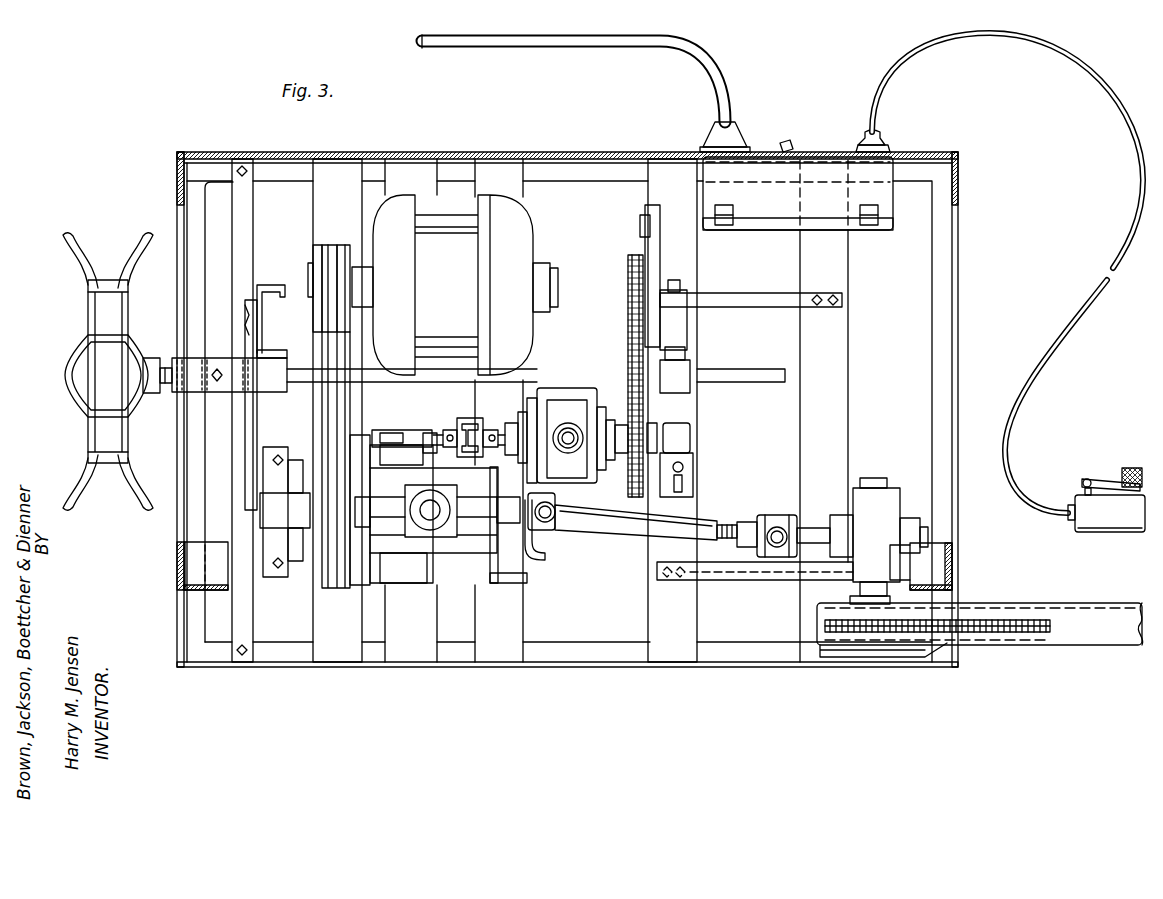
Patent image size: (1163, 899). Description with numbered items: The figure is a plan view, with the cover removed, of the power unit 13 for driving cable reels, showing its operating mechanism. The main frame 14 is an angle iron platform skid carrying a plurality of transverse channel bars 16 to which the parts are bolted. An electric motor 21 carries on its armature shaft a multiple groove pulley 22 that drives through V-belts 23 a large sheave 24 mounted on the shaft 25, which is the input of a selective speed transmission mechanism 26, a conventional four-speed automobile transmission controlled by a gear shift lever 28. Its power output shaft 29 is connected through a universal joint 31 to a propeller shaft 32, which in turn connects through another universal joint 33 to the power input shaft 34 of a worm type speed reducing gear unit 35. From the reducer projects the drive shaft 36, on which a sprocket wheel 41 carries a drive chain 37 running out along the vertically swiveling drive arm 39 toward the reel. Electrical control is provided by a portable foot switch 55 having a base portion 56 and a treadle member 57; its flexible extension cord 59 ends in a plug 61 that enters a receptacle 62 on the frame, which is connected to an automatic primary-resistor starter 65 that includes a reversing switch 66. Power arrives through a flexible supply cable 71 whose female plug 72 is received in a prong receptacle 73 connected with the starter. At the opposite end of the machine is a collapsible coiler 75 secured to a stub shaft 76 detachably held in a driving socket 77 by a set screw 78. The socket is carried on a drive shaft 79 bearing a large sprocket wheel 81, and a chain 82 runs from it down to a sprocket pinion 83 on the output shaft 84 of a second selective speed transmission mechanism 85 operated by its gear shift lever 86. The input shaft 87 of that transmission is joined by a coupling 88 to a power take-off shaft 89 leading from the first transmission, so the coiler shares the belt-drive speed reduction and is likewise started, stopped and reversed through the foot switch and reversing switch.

The power unit 13 is at (253, 132).
The main frame 14 is at (190, 186).
The transverse channel bars 16 is at (488, 165).
The electric motor 21 is at (527, 237).
The multiple groove pulley 22 is at (316, 256).
The V-belts 23 is at (345, 298).
The large sheave 24 is at (310, 586).
The shaft 25 is at (306, 505).
The selective speed transmission mechanism 26 is at (418, 553).
The gear shift lever 28 is at (435, 520).
The power output shaft 29 is at (527, 545).
The universal joint 31 is at (560, 522).
The propeller shaft 32 is at (640, 525).
The universal joint 33 is at (777, 520).
The power input shaft 34 is at (812, 528).
The speed reducing gear unit 35 is at (900, 505).
The drive shaft 36 is at (850, 600).
The drive chain 37 is at (1017, 635).
The drive arm 39 is at (1095, 637).
The sprocket wheel 41 is at (848, 635).
The foot switch 55 is at (1072, 470).
The base portion 56 is at (1110, 520).
The treadle member 57 is at (1130, 468).
The extension cord 59 is at (1105, 282).
The plug 61 is at (880, 136).
The receptacle 62 is at (892, 150).
The primary-resistor starter 65 is at (770, 208).
The reversing switch 66 is at (790, 151).
The supply cable 71 is at (604, 50).
The female plug 72 is at (735, 127).
The prong receptacle 73 is at (750, 148).
The coiler 75 is at (92, 315).
The stub shaft 76 is at (165, 385).
The driving socket 77 is at (178, 362).
The set screw 78 is at (217, 382).
The drive shaft 79 is at (303, 366).
The large sprocket wheel 81 is at (628, 285).
The chain 82 is at (662, 401).
The sprocket pinion 83 is at (660, 497).
The output shaft 84 is at (630, 473).
The selective speed transmission mechanism 85 is at (548, 390).
The gear shift lever 86 is at (568, 432).
The input shaft 87 is at (507, 425).
The coupling 88 is at (472, 428).
The power take-off shaft 89 is at (437, 435).